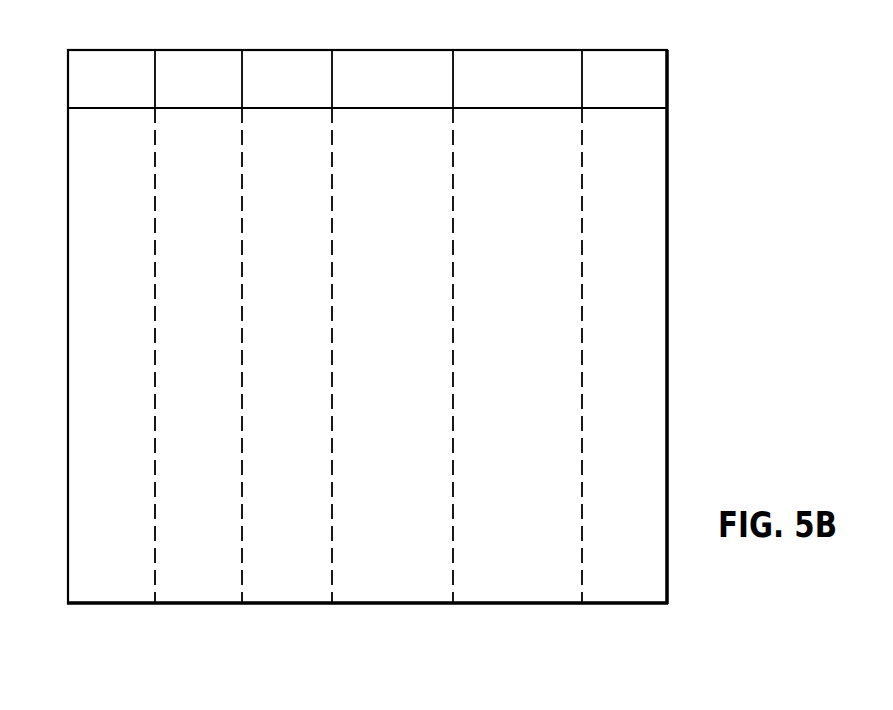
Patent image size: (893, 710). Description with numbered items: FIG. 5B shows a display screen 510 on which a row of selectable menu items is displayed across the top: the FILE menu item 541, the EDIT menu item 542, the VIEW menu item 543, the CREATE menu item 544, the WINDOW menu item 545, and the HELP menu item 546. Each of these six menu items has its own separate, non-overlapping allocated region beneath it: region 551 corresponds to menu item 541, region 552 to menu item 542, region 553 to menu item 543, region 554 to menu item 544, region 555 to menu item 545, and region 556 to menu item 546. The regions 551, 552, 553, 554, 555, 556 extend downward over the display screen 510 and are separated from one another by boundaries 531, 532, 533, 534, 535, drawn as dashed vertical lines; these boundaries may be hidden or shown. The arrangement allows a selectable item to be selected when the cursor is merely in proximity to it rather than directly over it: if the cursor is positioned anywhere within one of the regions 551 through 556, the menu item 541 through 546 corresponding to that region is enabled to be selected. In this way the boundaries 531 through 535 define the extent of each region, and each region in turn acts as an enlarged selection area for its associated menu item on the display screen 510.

The display screen 510 is at (668, 176).
The boundary 531 is at (155, 556).
The boundary 532 is at (242, 556).
The boundary 533 is at (332, 556).
The boundary 534 is at (453, 556).
The boundary 535 is at (582, 556).
The menu item 541 is at (115, 58).
The menu item 542 is at (200, 58).
The menu item 543 is at (288, 58).
The menu item 544 is at (372, 55).
The menu item 545 is at (507, 55).
The menu item 546 is at (628, 55).
The region 551 is at (130, 390).
The region 552 is at (181, 390).
The region 553 is at (271, 390).
The region 554 is at (369, 390).
The region 555 is at (494, 390).
The region 556 is at (608, 390).